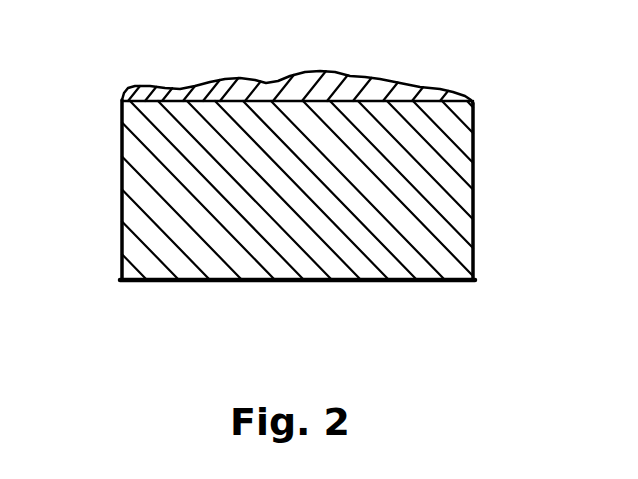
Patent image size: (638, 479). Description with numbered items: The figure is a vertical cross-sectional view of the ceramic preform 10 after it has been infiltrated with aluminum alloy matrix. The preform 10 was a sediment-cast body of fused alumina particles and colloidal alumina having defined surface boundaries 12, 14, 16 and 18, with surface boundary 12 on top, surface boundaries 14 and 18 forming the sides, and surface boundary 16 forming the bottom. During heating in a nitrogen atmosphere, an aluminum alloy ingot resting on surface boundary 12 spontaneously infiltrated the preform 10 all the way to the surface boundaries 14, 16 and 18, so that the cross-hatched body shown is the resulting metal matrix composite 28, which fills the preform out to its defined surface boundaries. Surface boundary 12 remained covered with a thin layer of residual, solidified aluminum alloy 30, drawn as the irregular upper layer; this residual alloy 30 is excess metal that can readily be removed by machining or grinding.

The preform 10 is at (294, 184).
The surface boundary 12 is at (323, 102).
The surface boundary 14 is at (476, 150).
The surface boundary 16 is at (200, 282).
The surface boundary 18 is at (123, 193).
The metal matrix composite 28 is at (170, 132).
The residual solidified aluminum alloy 30 is at (443, 92).